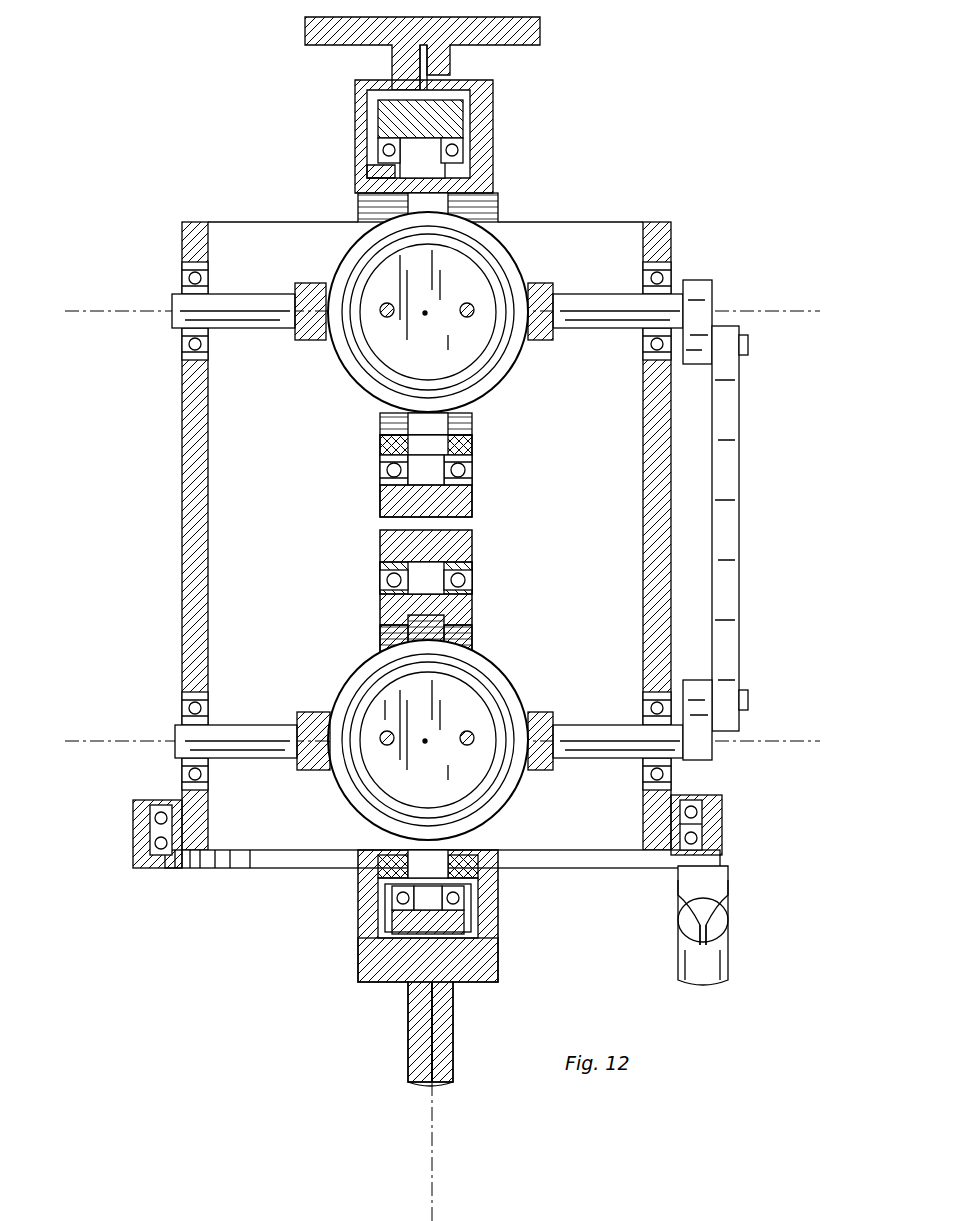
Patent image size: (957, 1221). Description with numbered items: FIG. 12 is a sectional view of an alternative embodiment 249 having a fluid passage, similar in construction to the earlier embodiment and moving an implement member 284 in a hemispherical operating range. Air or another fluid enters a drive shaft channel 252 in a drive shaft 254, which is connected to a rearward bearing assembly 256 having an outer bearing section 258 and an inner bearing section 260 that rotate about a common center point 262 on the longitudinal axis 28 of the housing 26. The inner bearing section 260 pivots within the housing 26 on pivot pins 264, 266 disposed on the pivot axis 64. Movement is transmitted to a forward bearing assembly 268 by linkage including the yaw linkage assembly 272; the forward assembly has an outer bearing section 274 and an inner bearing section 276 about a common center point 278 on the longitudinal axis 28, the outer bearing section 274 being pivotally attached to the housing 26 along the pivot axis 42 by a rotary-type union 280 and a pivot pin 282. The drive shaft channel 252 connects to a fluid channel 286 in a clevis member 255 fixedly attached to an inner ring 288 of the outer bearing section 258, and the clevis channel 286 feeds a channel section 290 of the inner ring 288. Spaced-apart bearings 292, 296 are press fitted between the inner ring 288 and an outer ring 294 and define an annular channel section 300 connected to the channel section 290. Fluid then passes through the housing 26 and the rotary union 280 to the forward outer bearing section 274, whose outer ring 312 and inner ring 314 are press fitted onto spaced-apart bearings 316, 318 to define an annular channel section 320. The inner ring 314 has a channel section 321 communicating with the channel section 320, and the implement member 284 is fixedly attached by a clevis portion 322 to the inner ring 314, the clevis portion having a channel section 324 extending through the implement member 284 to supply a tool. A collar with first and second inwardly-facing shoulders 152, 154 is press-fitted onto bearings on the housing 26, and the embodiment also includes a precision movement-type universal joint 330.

The housing 26 is at (200, 642).
The longitudinal axis 28 is at (434, 1100).
The pivot axis 42 is at (135, 310).
The pivot axis 64 is at (135, 740).
The first inwardly-facing shoulder 152 is at (690, 855).
The second inwardly-facing shoulder 154 is at (700, 835).
The embodiment 249 is at (175, 585).
The drive shaft channel 252 is at (425, 1025).
The drive shaft 254 is at (440, 1012).
The clevis member 255 is at (490, 945).
The rearward bearing assembly 256 is at (505, 660).
The outer bearing section 258 is at (475, 572).
The inner bearing section 260 is at (360, 665).
The common center point 262 is at (425, 741).
The pivot pin 264 is at (225, 738).
The pivot pin 266 is at (625, 745).
The forward bearing assembly 268 is at (620, 245).
The yaw linkage assembly 272 is at (740, 530).
The outer bearing section 274 is at (472, 480).
The inner bearing section 276 is at (520, 272).
The common center point 278 is at (425, 313).
The rotary-type union 280 is at (225, 300).
The pivot pin 282 is at (690, 295).
The implement member 284 is at (530, 28).
The fluid channel 286 is at (478, 960).
The inner ring 288 is at (470, 840).
The channel section 290 is at (470, 862).
The bearing 292 is at (390, 885).
The outer ring 294 is at (410, 940).
The bearing 296 is at (465, 900).
The annular channel section 300 is at (425, 907).
The outer ring 312 is at (462, 500).
The inner ring 314 is at (460, 205).
The bearing 316 is at (380, 480).
The bearing 318 is at (470, 470).
The annular channel section 320 is at (395, 148).
The channel section 321 is at (370, 178).
The clevis portion 322 is at (490, 88).
The channel section 324 is at (430, 62).
The universal joint 330 is at (730, 940).